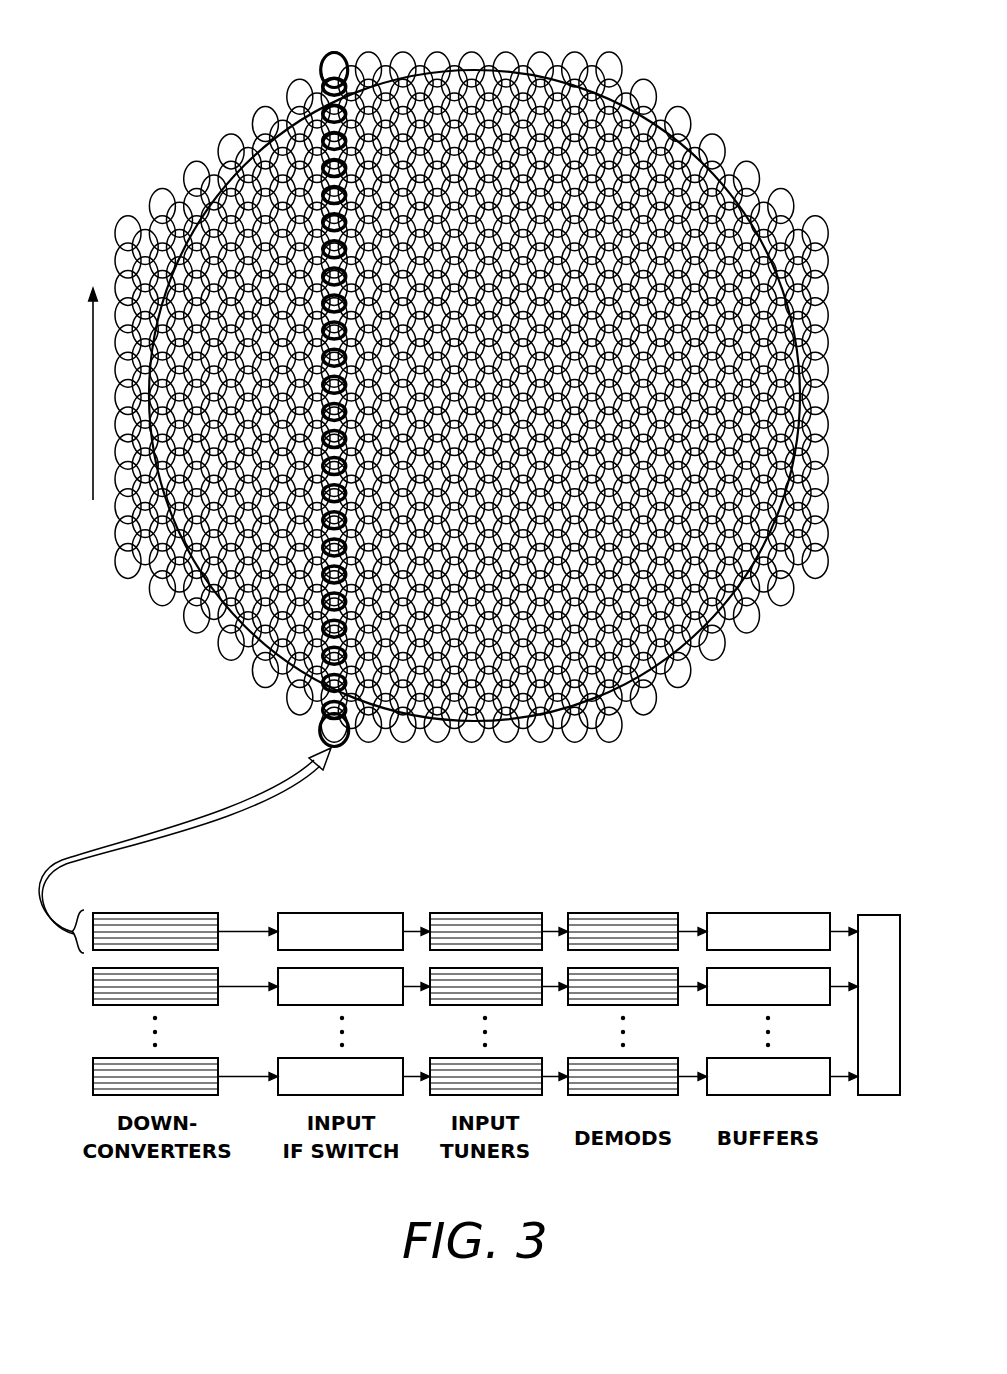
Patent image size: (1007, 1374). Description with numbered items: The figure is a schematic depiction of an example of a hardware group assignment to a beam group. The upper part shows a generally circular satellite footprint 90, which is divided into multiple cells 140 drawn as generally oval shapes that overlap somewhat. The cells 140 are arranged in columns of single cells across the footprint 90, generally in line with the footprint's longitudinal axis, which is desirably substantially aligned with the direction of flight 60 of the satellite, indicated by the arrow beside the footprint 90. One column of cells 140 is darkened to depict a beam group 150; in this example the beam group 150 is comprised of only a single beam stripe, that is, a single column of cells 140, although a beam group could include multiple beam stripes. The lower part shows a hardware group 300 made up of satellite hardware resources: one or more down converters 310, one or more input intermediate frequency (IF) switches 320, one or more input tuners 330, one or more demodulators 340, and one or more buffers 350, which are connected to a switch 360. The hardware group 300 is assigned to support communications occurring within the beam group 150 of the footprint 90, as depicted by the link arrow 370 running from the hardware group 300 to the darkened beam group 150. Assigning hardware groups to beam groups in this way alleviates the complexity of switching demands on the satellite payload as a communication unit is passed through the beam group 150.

The direction of flight 60 is at (90, 397).
The footprint 90 is at (678, 718).
The cells 140 is at (620, 62).
The beam group 150 is at (334, 40).
The hardware group 300 is at (63, 948).
The down converters 310 is at (156, 896).
The input intermediate frequency (IF) switches 320 is at (342, 896).
The input tuners 330 is at (486, 896).
The demodulators 340 is at (624, 896).
The buffers 350 is at (768, 896).
The switch 360 is at (874, 896).
The link arrow 370 is at (262, 808).